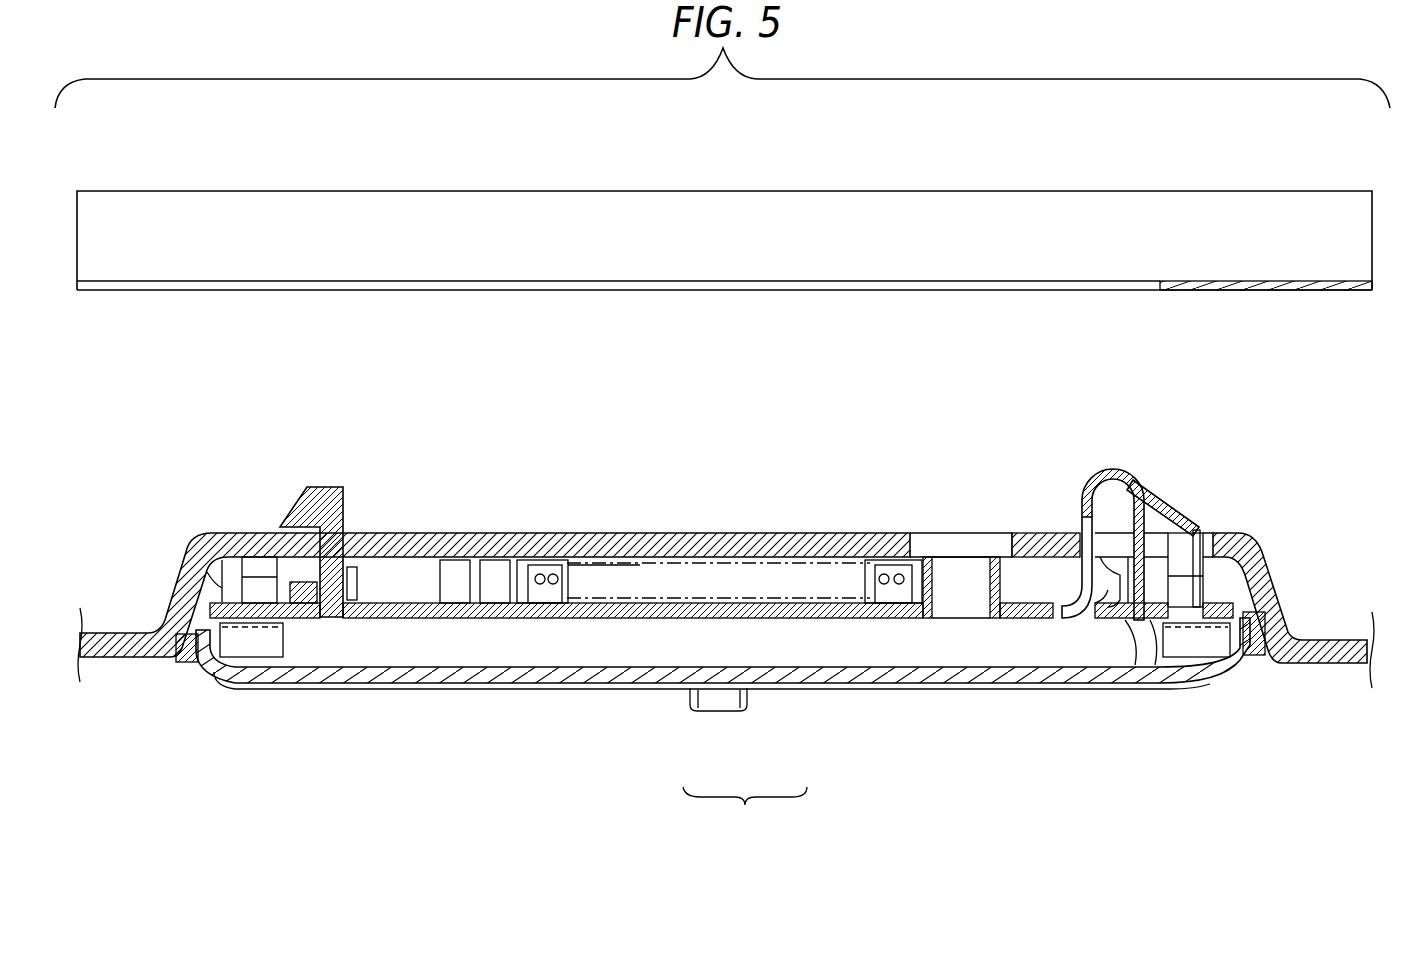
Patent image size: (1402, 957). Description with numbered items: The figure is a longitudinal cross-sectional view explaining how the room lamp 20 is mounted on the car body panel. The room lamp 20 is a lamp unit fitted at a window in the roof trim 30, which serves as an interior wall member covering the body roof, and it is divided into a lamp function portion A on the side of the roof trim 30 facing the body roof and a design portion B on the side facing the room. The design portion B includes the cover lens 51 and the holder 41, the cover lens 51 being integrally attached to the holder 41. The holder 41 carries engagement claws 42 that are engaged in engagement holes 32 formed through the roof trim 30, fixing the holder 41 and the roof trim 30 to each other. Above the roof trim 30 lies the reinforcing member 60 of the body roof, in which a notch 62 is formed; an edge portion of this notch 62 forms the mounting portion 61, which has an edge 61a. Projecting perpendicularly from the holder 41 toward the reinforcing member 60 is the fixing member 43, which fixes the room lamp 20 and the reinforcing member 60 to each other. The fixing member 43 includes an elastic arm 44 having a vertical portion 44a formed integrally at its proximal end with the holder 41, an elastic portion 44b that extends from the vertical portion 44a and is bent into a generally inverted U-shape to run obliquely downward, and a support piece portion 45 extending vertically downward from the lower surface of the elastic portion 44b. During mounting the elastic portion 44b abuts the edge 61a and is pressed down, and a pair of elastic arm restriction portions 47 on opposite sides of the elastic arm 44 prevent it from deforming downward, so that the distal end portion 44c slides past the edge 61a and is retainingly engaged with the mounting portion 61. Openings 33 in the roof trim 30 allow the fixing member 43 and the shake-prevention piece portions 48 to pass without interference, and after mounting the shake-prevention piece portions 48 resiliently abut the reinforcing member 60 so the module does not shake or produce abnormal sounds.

The reinforcing member 60 is at (1222, 185).
The mounting portion 61 is at (1192, 280).
The edge 61a is at (1160, 285).
The notch 62 is at (1125, 292).
The roof trim 30 is at (193, 531).
The openings 33 is at (1070, 535).
The engagement claws 42 is at (332, 478).
The engagement holes 32 is at (363, 578).
The elastic arm restriction portions 47 is at (371, 579).
The holder 41 is at (748, 628).
The lamp function portion A is at (676, 576).
The room lamp 20 is at (1029, 706).
The cover lens 51 is at (663, 697).
The design portion B is at (745, 811).
The fixing member 43 is at (1163, 558).
The elastic arm 44 is at (1144, 500).
The vertical portion 44a is at (1082, 475).
The elastic portion 44b is at (1167, 500).
The distal end portion 44c is at (1193, 530).
The support piece portion 45 is at (1130, 625).
The shake-prevention piece portions 48 is at (1200, 578).